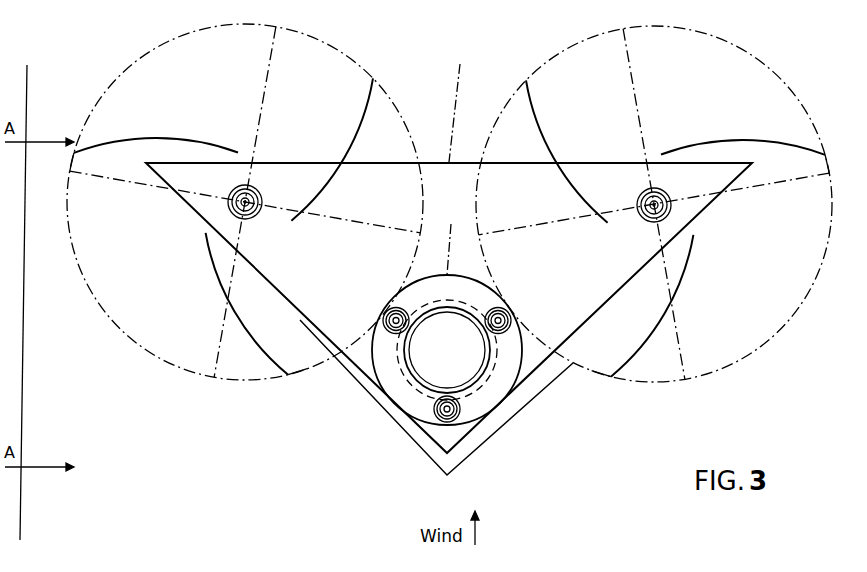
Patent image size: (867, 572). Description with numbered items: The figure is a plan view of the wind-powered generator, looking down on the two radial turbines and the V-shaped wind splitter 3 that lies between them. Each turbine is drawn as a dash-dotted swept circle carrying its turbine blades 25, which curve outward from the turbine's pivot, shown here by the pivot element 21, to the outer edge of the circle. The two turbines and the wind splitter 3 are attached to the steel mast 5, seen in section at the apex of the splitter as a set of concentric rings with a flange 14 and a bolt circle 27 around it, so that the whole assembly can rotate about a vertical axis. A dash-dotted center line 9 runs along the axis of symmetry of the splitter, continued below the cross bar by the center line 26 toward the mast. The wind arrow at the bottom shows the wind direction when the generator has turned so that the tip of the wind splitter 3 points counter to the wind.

The V-shaped wind splitter 3 is at (390, 418).
The steel mast 5 is at (488, 367).
The central axis / mast 9 is at (457, 104).
The hub flange with bolts 14 is at (386, 329).
The rotor pivot axle 21 is at (238, 218).
The turbine blades 25 is at (366, 116).
The center line of hub 26 is at (451, 240).
The bolt circle 27 is at (397, 353).